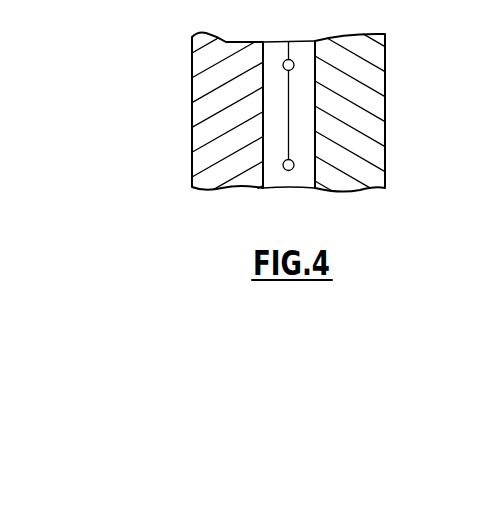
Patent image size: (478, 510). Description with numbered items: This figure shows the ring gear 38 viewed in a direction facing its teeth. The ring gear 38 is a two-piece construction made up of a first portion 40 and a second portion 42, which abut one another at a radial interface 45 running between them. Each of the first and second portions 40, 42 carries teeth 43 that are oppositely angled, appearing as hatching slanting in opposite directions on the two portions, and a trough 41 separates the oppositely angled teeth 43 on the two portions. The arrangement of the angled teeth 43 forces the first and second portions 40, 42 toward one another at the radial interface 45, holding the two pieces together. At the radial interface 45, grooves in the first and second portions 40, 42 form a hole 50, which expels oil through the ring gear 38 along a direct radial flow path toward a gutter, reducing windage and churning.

The ring gear 38 is at (287, 128).
The first portion 40 is at (178, 142).
The trough 41 is at (272, 200).
The second portion 42 is at (400, 142).
The teeth 43 is at (230, 63).
The radial interface 45 is at (291, 88).
The hole 50 is at (285, 61).